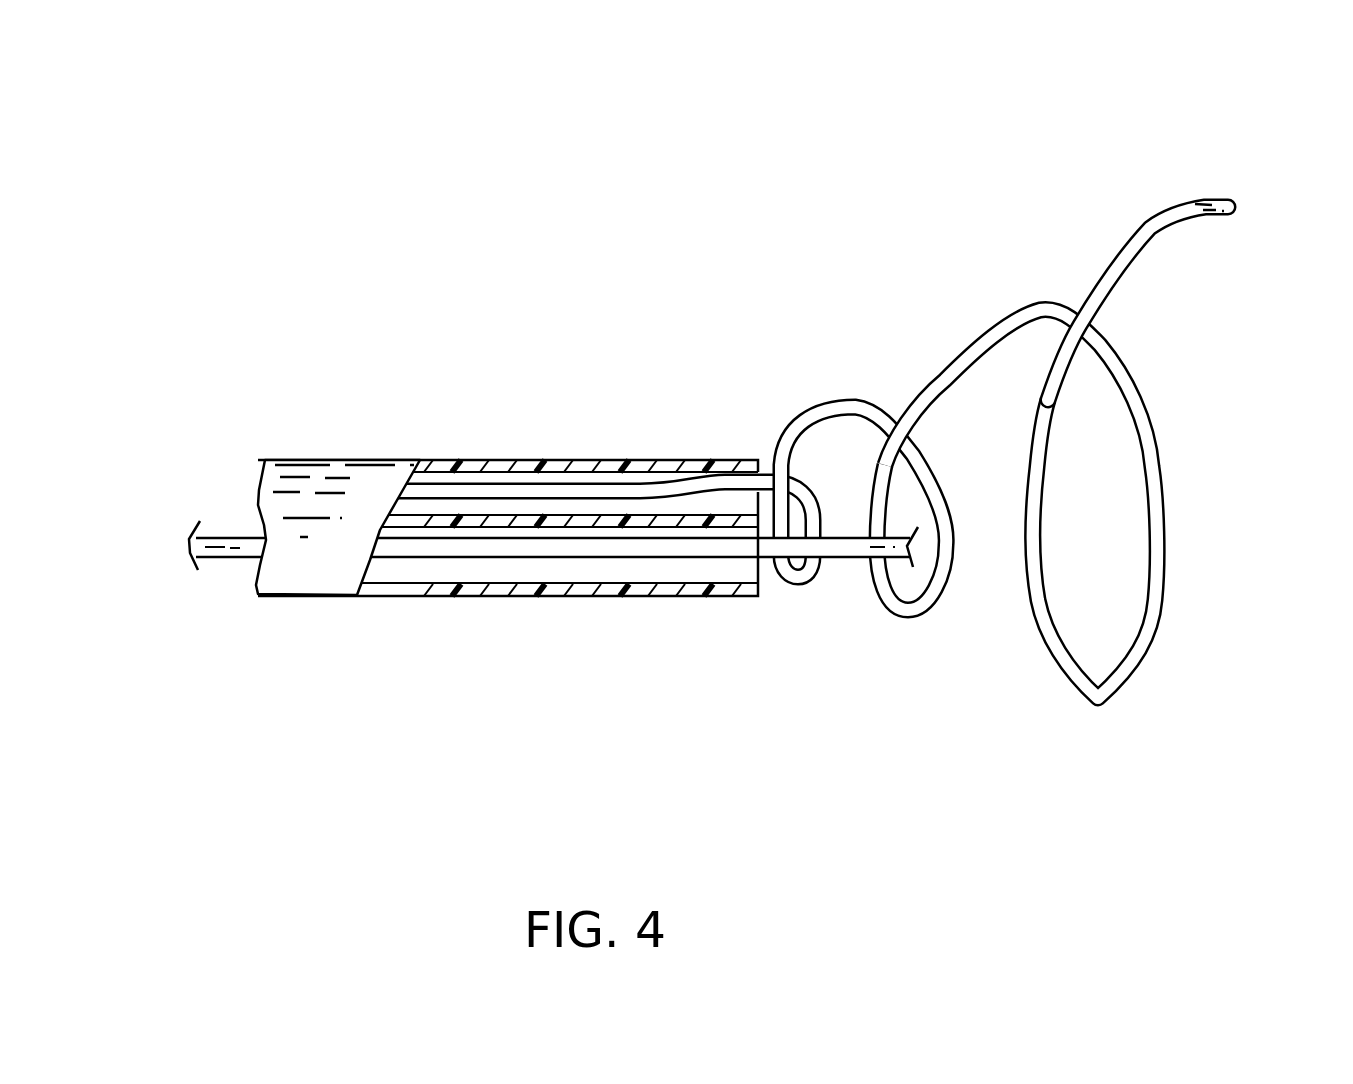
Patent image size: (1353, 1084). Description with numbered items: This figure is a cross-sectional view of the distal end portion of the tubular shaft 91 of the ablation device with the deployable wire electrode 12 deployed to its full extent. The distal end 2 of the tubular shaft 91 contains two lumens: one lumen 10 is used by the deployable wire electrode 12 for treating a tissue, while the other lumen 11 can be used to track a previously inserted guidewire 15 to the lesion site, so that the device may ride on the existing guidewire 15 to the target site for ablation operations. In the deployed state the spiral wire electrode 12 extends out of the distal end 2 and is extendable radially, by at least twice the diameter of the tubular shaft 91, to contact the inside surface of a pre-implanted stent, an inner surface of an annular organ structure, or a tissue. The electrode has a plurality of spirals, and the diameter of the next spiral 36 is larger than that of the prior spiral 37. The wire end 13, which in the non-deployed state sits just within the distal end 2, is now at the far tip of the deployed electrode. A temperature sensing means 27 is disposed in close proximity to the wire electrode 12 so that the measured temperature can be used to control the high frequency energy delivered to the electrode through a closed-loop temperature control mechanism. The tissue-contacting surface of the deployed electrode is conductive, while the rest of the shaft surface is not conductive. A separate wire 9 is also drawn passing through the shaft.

The distal end 2 is at (762, 452).
The guide wire 9 is at (543, 532).
The lumen 10 is at (450, 478).
The lumen 11 is at (423, 570).
The deployable wire electrode 12 is at (518, 487).
The wire end 13 is at (1242, 192).
The guidewire 15 is at (232, 560).
The temperature sensing means 27 is at (1212, 190).
The next spiral 36 is at (1042, 745).
The prior spiral 37 is at (965, 677).
The tubular shaft 91 is at (343, 460).